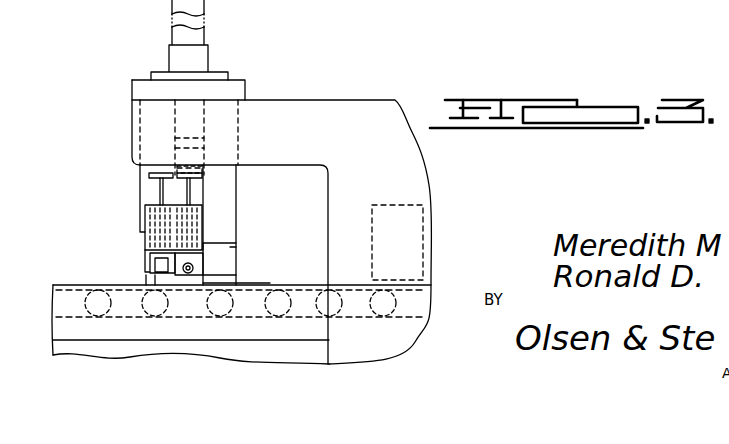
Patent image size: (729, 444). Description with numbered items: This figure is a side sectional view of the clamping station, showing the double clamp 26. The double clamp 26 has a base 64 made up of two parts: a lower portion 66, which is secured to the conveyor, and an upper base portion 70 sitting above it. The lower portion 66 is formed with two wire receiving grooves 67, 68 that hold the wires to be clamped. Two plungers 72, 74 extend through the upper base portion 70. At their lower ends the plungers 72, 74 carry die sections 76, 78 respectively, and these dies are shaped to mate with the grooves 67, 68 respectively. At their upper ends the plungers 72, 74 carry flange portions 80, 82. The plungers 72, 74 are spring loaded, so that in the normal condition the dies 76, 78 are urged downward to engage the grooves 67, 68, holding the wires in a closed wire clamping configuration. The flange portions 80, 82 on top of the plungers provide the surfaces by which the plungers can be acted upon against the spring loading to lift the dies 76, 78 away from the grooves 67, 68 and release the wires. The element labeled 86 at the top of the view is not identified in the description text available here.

The double clamp 26 is at (240, 226).
The base 64 is at (232, 239).
The lower portion 66 is at (148, 276).
The wire receiving groove 67 is at (162, 275).
The wire receiving groove 68 is at (203, 275).
The upper base portion 70 is at (145, 229).
The plunger 72 is at (160, 188).
The plunger 74 is at (230, 179).
The die section 76 is at (150, 264).
The die section 78 is at (203, 257).
The flange portion 80 is at (150, 176).
The flange portion 82 is at (236, 147).
The ram 86 is at (164, 40).